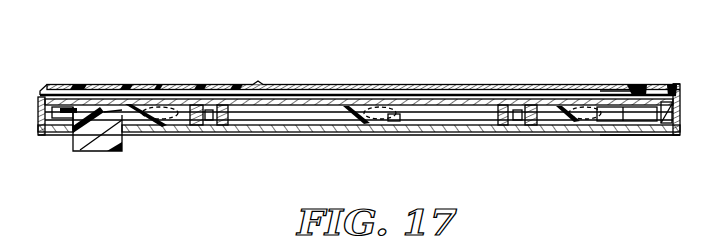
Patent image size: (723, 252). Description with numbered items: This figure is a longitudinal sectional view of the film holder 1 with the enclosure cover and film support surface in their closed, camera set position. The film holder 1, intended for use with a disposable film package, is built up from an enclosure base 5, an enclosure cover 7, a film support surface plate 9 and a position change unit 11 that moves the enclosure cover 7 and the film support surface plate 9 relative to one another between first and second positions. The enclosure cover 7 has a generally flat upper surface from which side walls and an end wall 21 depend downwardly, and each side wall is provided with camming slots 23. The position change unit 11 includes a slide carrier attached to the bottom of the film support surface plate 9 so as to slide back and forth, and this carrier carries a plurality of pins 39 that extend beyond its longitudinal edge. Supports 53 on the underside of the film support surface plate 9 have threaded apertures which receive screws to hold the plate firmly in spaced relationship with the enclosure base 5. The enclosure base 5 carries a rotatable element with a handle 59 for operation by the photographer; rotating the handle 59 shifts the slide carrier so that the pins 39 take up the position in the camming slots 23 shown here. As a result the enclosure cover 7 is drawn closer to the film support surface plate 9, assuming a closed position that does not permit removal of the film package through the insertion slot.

The film holder 1 is at (629, 80).
The enclosure base 5 is at (682, 136).
The enclosure cover 7 is at (207, 84).
The film support surface plate 9 is at (622, 121).
The position change unit 11 is at (398, 118).
The end wall 21 is at (672, 117).
The camming slots 23 is at (149, 130).
The pins 39 is at (150, 104).
The supports 53 is at (228, 128).
The handle 59 is at (108, 149).